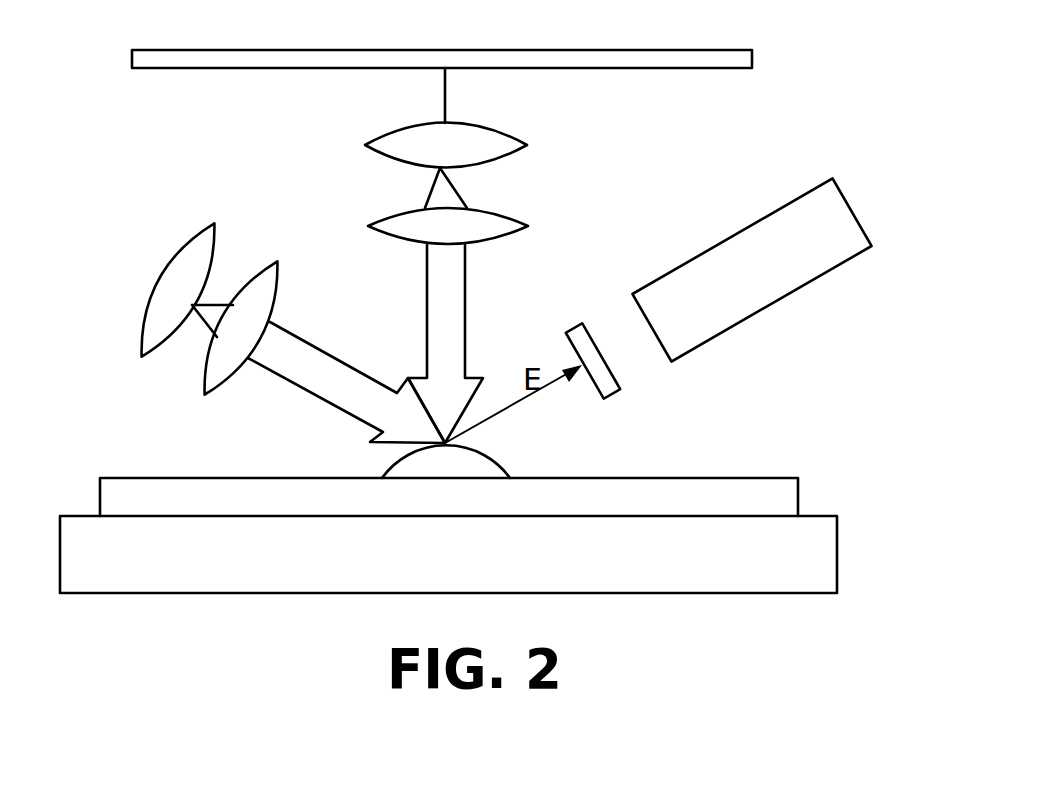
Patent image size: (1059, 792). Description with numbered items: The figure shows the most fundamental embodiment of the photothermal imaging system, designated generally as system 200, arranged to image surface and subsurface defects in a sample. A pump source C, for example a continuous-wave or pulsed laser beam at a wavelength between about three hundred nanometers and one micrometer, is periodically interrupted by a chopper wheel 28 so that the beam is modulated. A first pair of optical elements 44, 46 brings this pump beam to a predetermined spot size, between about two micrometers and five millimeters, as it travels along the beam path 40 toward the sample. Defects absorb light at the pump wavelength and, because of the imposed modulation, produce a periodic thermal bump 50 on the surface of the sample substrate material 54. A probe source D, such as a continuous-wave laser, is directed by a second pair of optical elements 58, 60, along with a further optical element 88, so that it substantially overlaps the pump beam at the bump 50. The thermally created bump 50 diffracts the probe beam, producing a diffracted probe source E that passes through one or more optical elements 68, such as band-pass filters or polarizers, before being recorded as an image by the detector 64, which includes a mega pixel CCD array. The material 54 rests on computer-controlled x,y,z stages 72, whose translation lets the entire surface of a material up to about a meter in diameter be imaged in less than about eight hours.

The system 200 is at (182, 152).
The chopper wheel 28 is at (662, 50).
The optical element 44 is at (507, 131).
The optical element 46 is at (503, 225).
The illumination beam C 40 is at (440, 271).
The lens 88 is at (181, 255).
The optical element 60 is at (206, 382).
The optical element 58 is at (298, 352).
The detector 64 is at (730, 237).
The optical element 68 is at (622, 386).
The thermal bump 50 is at (505, 463).
The sample substrate material 54 is at (265, 480).
The x,y,z stages 72 is at (138, 575).